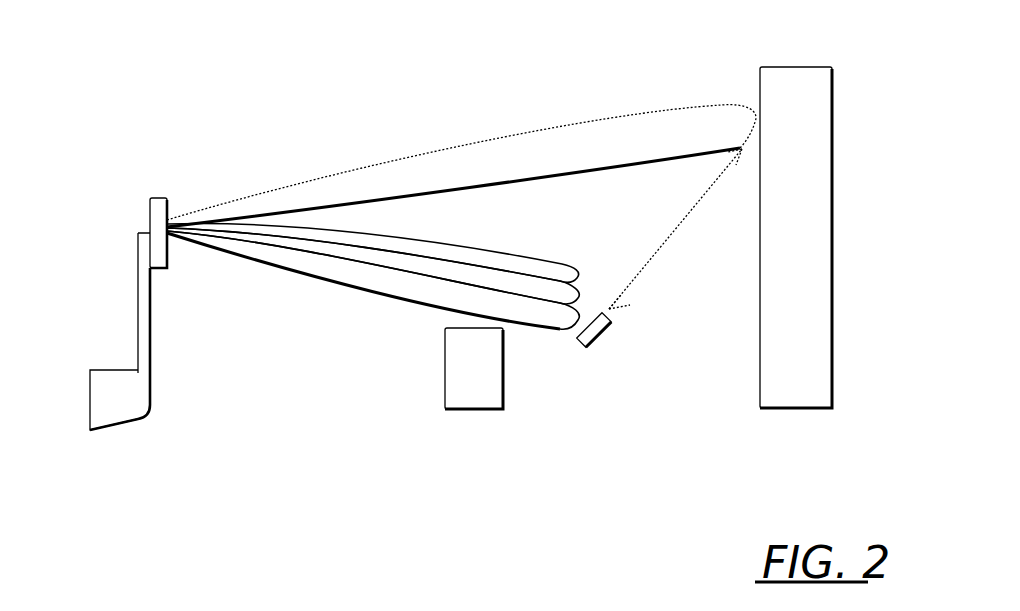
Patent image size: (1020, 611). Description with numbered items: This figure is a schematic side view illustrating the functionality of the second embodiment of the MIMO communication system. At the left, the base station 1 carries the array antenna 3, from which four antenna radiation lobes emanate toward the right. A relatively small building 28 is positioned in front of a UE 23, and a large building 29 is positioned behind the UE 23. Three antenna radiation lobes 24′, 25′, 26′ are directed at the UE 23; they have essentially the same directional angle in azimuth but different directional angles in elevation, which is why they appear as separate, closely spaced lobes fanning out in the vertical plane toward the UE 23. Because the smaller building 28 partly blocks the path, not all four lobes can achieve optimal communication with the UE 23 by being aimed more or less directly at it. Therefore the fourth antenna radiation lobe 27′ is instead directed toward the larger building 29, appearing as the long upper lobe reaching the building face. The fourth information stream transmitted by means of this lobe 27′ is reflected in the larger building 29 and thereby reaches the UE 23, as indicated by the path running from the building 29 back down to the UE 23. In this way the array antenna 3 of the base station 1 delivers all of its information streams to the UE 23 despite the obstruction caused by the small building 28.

The base station 1 is at (132, 219).
The array antenna 3 is at (157, 200).
The UE 23 is at (578, 340).
The antenna radiation lobe 24′ is at (390, 288).
The antenna radiation lobe 25′ is at (563, 303).
The antenna radiation lobe 26′ is at (552, 272).
The fourth antenna radiation lobe 27′ is at (483, 153).
The small building 28 is at (476, 400).
The larger building 29 is at (792, 398).